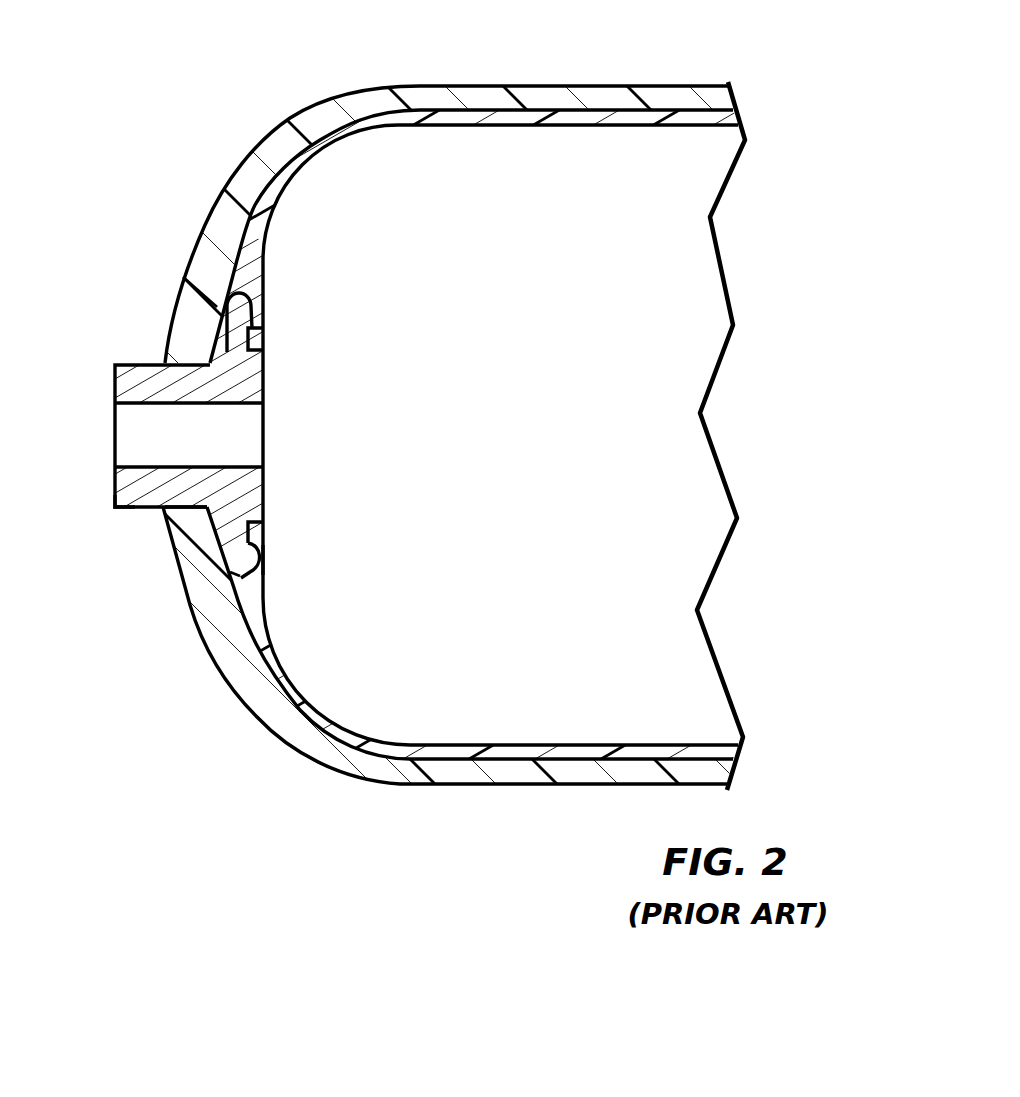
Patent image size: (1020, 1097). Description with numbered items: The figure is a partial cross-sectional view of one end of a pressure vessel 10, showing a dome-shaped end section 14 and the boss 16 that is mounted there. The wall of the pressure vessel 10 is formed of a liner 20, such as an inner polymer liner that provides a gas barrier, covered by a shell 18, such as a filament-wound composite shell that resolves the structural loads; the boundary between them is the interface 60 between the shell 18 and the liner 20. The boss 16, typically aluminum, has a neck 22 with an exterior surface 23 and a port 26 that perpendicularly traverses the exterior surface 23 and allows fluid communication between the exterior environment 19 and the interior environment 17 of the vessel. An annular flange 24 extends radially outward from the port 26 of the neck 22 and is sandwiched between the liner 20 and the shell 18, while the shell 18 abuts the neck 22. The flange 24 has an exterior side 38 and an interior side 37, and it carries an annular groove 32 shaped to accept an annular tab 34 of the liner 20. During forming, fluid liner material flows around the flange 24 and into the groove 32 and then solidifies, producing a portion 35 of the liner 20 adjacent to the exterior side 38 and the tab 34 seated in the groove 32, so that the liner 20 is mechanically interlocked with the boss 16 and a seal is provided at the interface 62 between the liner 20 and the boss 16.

The pressure vessel 10 is at (194, 100).
The end section 14 is at (341, 82).
The boss 16 is at (126, 515).
The interior environment 17 is at (492, 426).
The shell 18 is at (660, 98).
The exterior environment 19 is at (49, 318).
The liner 20 is at (680, 115).
The neck 22 is at (155, 500).
The exterior surface 23 is at (115, 380).
The flange 24 is at (244, 312).
The port 26 is at (163, 467).
The groove 32 is at (243, 353).
The tab 34 is at (258, 337).
The portion of liner 35 is at (183, 277).
The interior side 37 is at (270, 560).
The exterior side 38 is at (226, 576).
The interface 60 is at (535, 113).
The interface 62 is at (265, 512).